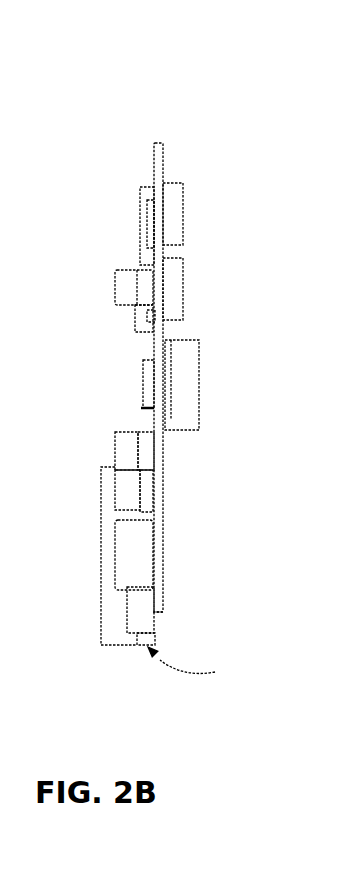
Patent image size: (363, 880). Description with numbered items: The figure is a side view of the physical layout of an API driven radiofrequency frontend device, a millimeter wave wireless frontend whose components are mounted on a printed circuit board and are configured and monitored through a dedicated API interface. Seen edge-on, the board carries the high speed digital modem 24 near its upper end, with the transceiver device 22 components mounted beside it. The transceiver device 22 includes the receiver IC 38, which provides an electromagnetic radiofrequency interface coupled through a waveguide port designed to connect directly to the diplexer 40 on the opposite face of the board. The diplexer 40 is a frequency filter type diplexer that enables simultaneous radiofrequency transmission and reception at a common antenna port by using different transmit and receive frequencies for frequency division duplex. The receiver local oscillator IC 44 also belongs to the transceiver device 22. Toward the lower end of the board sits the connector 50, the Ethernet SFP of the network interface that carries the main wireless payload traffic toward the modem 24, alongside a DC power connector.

The transceiver device 22 is at (228, 431).
The modem 24 is at (135, 247).
The receiver IC 38 is at (62, 368).
The diplexer 40 is at (212, 408).
The receiver local oscillator IC 44 is at (78, 462).
The SFP 50 is at (108, 658).